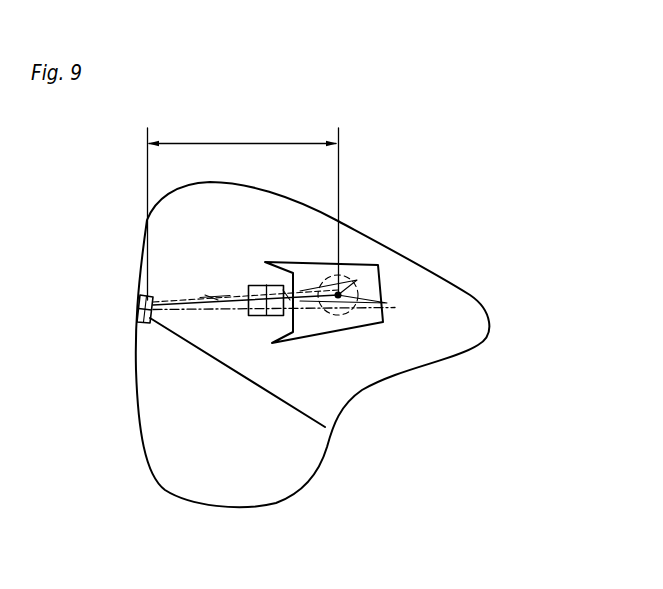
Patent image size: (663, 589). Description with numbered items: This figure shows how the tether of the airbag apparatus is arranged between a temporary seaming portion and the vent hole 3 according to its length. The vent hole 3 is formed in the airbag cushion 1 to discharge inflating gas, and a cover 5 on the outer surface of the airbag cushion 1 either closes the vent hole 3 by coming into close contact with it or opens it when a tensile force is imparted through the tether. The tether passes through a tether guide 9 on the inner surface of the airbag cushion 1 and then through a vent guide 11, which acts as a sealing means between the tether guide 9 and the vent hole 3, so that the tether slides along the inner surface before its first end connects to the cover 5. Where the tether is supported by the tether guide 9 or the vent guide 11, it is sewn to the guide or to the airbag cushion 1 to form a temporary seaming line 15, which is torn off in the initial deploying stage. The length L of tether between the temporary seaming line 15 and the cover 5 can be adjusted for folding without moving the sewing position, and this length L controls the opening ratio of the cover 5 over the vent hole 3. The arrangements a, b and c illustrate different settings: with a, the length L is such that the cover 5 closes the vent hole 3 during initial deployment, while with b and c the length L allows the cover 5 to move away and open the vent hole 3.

The airbag cushion 1 is at (367, 232).
The vent hole 3 is at (341, 292).
The cover 5 is at (383, 281).
The tether guide 9 is at (138, 316).
The vent guide 11 is at (258, 316).
The temporary seaming line 15 is at (248, 311).
The tether arrangement a is at (227, 298).
The tether arrangement b is at (213, 298).
The tether arrangement c is at (285, 292).
The length L is at (243, 208).